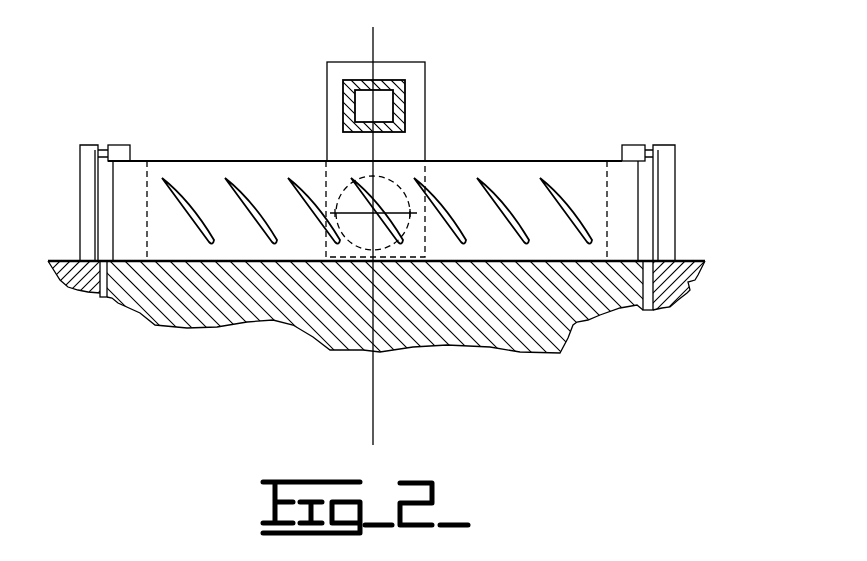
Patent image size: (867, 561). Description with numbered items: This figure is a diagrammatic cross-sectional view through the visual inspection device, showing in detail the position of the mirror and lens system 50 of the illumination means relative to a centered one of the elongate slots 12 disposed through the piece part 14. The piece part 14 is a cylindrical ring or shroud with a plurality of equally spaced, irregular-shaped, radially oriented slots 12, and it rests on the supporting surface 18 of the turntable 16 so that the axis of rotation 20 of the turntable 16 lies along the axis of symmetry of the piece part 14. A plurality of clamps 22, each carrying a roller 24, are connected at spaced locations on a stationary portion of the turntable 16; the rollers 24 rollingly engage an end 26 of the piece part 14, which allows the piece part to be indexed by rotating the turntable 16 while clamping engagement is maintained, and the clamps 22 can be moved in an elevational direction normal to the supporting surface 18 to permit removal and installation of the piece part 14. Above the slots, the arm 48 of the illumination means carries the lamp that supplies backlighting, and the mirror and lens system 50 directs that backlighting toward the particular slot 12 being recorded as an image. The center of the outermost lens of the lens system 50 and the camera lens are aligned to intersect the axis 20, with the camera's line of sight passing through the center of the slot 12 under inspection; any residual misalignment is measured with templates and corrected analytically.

The elongate slot 12 is at (302, 195).
The piece part 14 is at (628, 223).
The turntable 16 is at (577, 323).
The supporting surface 18 is at (625, 260).
The axis of rotation 20 is at (375, 47).
The clamp 22 is at (90, 143).
The roller 24 is at (122, 145).
The end of the piece part 26 is at (537, 161).
The arm 48 is at (405, 108).
The mirror and lens system 50 is at (403, 178).